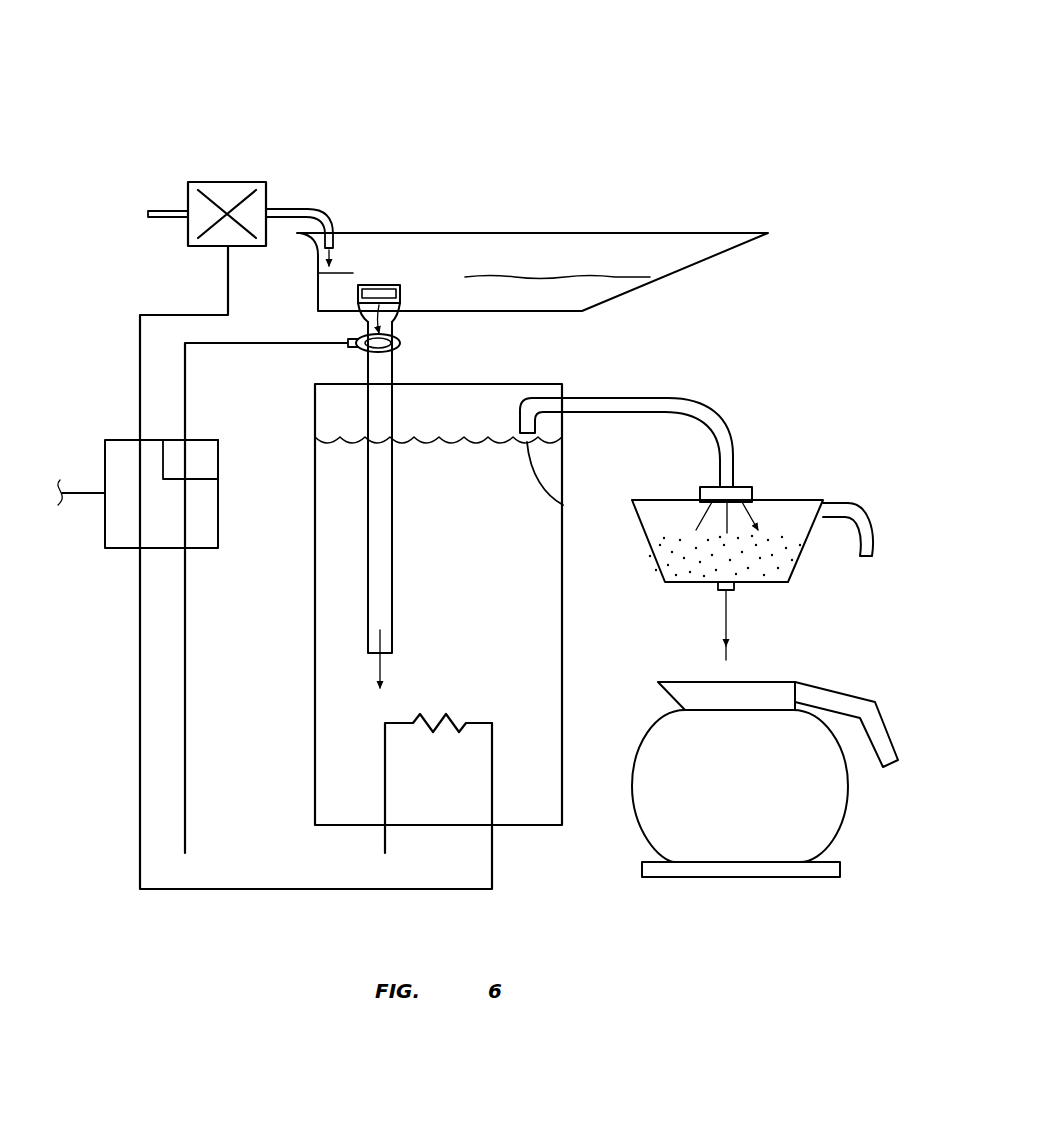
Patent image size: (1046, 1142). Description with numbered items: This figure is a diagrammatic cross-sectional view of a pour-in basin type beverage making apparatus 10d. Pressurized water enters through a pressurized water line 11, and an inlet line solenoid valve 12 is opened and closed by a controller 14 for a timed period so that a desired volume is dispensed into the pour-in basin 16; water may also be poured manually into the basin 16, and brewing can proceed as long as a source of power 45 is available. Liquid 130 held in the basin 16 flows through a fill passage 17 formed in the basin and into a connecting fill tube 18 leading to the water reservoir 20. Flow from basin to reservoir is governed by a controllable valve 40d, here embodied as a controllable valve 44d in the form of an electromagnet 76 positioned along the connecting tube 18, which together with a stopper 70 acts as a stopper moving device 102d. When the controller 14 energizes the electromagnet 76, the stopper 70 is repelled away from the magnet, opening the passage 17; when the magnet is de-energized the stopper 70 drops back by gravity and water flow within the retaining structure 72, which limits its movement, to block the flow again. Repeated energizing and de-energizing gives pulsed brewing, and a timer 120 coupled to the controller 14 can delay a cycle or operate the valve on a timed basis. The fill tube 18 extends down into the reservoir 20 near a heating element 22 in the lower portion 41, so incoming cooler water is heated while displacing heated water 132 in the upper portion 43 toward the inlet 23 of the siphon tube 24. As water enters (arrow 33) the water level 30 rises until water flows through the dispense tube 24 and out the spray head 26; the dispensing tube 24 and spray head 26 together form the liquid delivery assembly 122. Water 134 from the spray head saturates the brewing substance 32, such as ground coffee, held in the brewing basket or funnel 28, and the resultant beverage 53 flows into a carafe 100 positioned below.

The beverage making apparatus 10d is at (660, 103).
The pressurized water line 11 is at (130, 215).
The inlet line solenoid valve 12 is at (233, 178).
The controller 14 is at (122, 550).
The pour-in basin 16 is at (738, 230).
The fill passage 17 is at (352, 338).
The connecting fill tube 18 is at (395, 373).
The water reservoir 20 is at (562, 652).
The heating element 22 is at (492, 770).
The inlet 23 is at (563, 505).
The siphon tube 24 is at (723, 410).
The spray head 26 is at (752, 477).
The brewing basket 28 is at (765, 590).
The water level 30 is at (567, 438).
The brewing substance 32 is at (678, 568).
The arrow 33 is at (385, 660).
The controllable valve 40d is at (412, 213).
The lower portion 41 is at (315, 750).
The upper portion 43 is at (315, 468).
The controllable valve 44d is at (508, 363).
The source of power 45 is at (78, 477).
The resultant beverage 53 is at (730, 613).
The stopper 70 is at (387, 292).
The retaining structure 72 is at (402, 307).
The electromagnet 76 is at (402, 344).
The carafe 100 is at (853, 795).
The stopper moving device 102d is at (566, 322).
The timer 120 is at (220, 458).
The liquid delivery assembly 122 is at (762, 423).
The liquid 130 is at (618, 275).
The water 132 is at (315, 580).
The water 134 is at (700, 503).